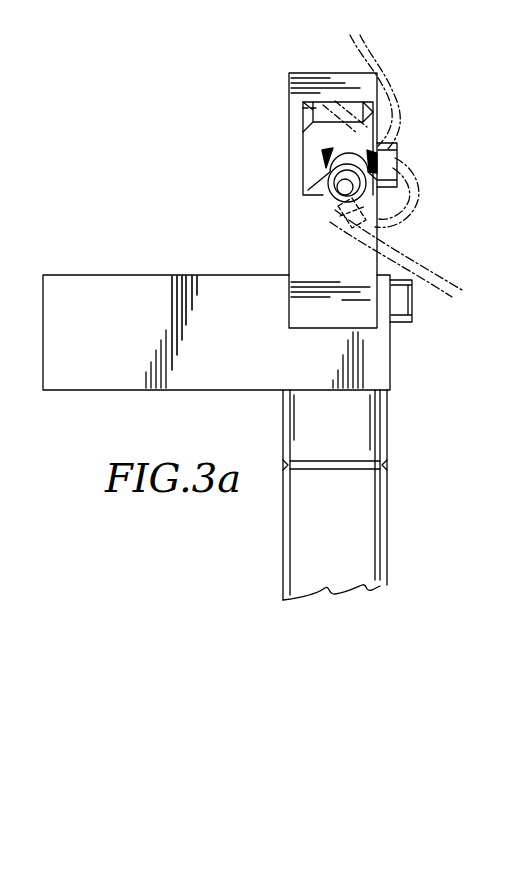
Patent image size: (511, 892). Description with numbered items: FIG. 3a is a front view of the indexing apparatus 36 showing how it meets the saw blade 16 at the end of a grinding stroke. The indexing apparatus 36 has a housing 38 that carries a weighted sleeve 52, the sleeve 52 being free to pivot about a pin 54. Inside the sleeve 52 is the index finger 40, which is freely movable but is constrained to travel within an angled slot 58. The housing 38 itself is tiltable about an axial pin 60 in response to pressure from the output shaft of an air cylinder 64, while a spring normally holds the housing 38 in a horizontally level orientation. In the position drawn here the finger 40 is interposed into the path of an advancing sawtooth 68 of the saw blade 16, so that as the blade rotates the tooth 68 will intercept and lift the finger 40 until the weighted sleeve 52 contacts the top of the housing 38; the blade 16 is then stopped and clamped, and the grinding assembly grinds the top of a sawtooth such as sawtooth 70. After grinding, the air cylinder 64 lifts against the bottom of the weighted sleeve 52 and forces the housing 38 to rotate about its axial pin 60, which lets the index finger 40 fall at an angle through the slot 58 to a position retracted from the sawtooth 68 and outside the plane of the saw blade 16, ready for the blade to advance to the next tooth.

The saw blade 16 is at (426, 258).
The indexing apparatus 36 is at (136, 274).
The housing 38 is at (323, 72).
The index finger 40 is at (338, 206).
The weighted sleeve 52 is at (304, 148).
The pin 54 is at (398, 157).
The angled slot 58 is at (311, 196).
The axial pin 60 is at (413, 307).
The air cylinder 64 is at (388, 560).
The sawtooth 68 is at (324, 229).
The sawtooth 70 is at (303, 107).